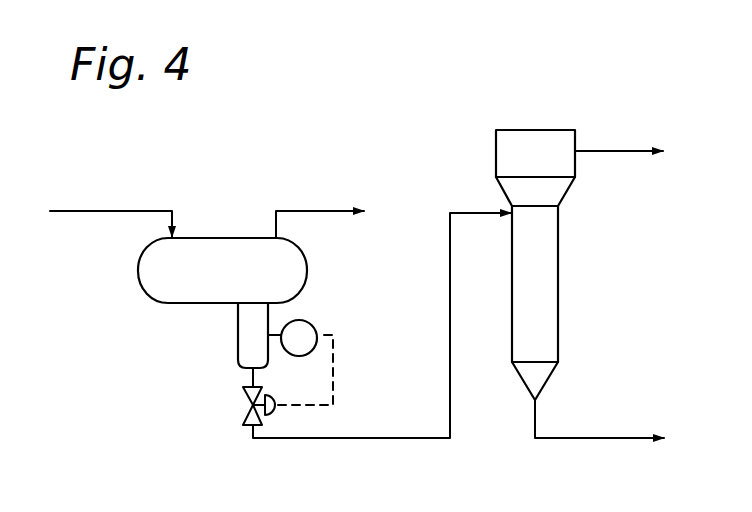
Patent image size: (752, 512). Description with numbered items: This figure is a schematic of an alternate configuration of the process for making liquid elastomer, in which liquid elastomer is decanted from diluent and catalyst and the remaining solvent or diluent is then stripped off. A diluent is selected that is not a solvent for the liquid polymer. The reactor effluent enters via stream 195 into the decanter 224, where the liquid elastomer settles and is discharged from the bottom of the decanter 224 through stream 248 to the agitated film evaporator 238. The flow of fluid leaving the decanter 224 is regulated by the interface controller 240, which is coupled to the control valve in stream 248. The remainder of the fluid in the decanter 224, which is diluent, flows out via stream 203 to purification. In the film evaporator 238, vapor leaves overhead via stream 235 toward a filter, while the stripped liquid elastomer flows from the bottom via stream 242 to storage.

The stream 195 is at (88, 211).
The stream 203 is at (310, 211).
The decanter 224 is at (138, 272).
The interface controller 240 is at (325, 335).
The stream 248 is at (372, 438).
The agitated film evaporator 238 is at (496, 140).
The stream 235 is at (615, 150).
The stream 242 is at (588, 438).